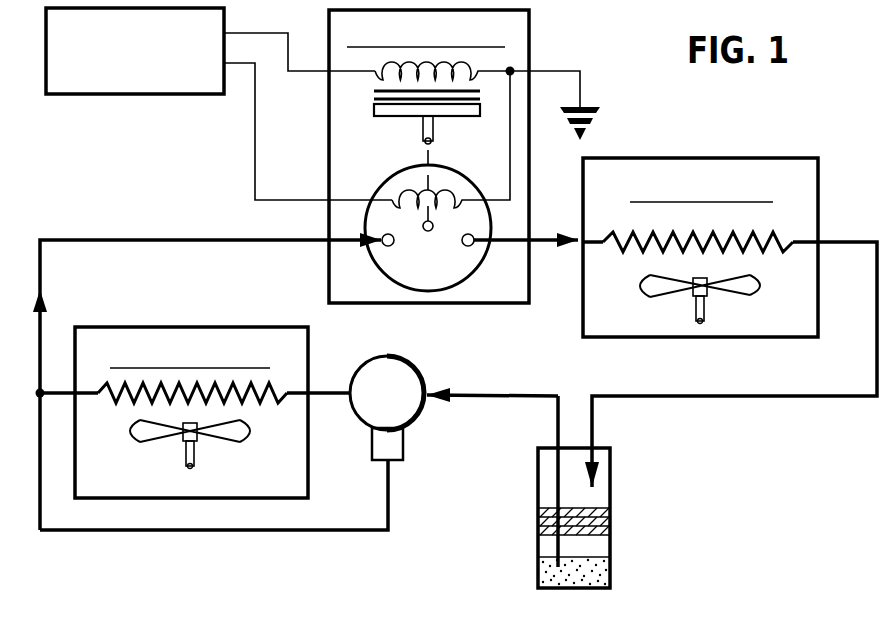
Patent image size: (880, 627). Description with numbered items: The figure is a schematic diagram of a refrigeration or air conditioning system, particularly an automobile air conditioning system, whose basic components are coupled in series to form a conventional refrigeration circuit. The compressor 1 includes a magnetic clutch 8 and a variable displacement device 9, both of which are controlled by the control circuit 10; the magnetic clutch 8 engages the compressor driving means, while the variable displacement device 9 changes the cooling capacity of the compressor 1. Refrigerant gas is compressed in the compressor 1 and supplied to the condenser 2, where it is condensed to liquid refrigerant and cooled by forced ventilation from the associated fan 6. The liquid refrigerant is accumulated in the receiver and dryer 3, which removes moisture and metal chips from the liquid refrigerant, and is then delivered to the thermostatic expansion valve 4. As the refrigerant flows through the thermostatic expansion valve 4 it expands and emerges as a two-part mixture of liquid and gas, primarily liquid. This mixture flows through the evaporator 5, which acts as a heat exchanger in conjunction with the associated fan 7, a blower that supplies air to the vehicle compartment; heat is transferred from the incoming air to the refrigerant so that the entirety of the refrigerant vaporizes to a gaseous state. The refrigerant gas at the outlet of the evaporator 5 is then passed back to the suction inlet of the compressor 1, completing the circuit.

The compressor 1 is at (464, 154).
The condenser 2 is at (700, 223).
The receiver and dryer 3 is at (538, 505).
The thermostatic expansion valve 4 is at (408, 375).
The evaporator 5 is at (191, 389).
The fan 6 is at (735, 290).
The fan 7 is at (228, 440).
The magnetic clutch 8 is at (395, 118).
The variable displacement device 9 is at (403, 258).
The control circuit 10 is at (112, 95).